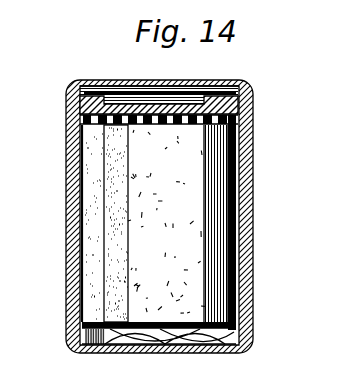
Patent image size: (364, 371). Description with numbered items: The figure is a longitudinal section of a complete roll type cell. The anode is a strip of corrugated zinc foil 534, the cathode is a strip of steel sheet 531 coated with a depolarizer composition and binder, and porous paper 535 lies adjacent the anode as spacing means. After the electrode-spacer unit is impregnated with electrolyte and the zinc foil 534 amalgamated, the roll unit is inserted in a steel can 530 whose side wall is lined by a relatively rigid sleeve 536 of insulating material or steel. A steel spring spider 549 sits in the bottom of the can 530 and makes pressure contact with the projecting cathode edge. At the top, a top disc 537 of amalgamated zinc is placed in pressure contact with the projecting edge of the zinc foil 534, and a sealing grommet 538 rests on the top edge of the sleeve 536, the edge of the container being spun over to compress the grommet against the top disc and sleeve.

The steel can 530 is at (251, 232).
The steel sheet 531 is at (113, 258).
The corrugated zinc foil 534 is at (252, 116).
The porous paper 535 is at (193, 179).
The sleeve 536 is at (240, 203).
The top disc 537 is at (196, 108).
The sealing grommet 538 is at (250, 97).
The steel spring spider 549 is at (230, 338).